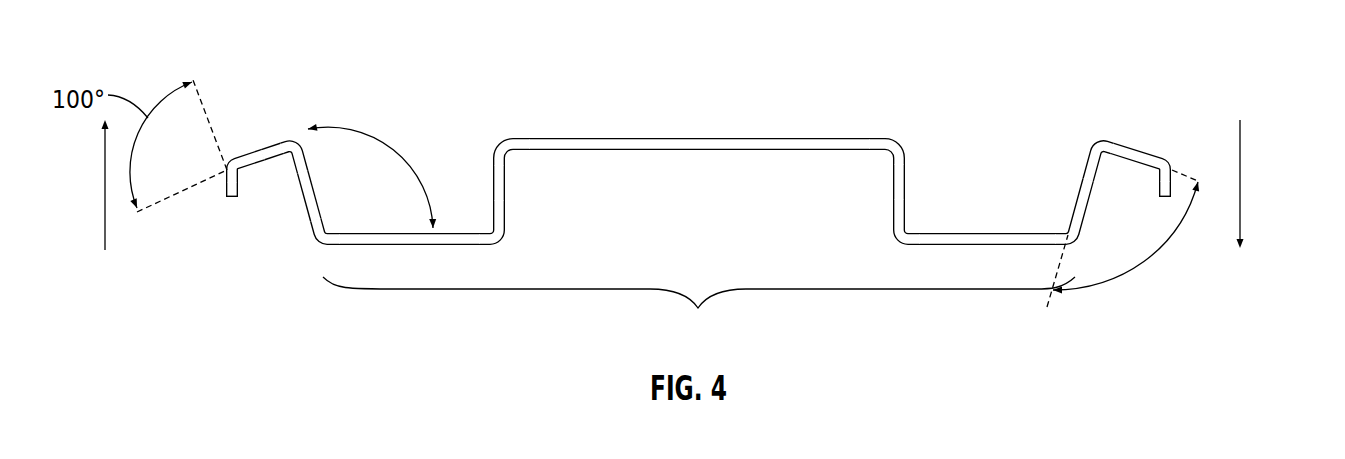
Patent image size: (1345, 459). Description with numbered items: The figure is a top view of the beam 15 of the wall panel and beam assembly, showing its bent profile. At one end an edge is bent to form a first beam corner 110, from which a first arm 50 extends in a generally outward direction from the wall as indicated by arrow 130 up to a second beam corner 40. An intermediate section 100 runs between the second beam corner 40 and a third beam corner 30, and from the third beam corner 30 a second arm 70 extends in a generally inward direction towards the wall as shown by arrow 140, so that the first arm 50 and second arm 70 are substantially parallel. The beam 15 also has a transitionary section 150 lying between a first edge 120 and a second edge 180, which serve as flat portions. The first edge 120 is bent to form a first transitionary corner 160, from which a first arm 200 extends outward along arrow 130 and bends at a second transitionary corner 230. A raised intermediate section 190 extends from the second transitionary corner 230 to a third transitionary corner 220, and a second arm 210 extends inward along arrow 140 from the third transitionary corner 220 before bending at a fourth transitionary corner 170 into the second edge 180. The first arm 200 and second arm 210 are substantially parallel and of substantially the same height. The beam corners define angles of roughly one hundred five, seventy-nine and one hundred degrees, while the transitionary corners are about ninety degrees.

The beam 15 is at (202, 76).
The third beam corner 30 is at (225, 165).
The second beam corner 40 is at (300, 137).
The first arm 50 is at (320, 187).
The second arm 70 is at (228, 195).
The intermediate section 100 is at (258, 146).
The first beam corner 110 is at (323, 238).
The first edge 120 is at (423, 246).
The arrow 130 is at (105, 195).
The arrow 140 is at (1241, 195).
The transitionary section 150 is at (699, 308).
The first transitionary corner 160 is at (500, 236).
The fourth transitionary corner 170 is at (897, 238).
The second edge 180 is at (990, 247).
The intermediate section 190 is at (632, 140).
The first arm 200 is at (507, 196).
The second arm 210 is at (891, 203).
The third transitionary corner 220 is at (890, 145).
The second transitionary corner 230 is at (503, 142).